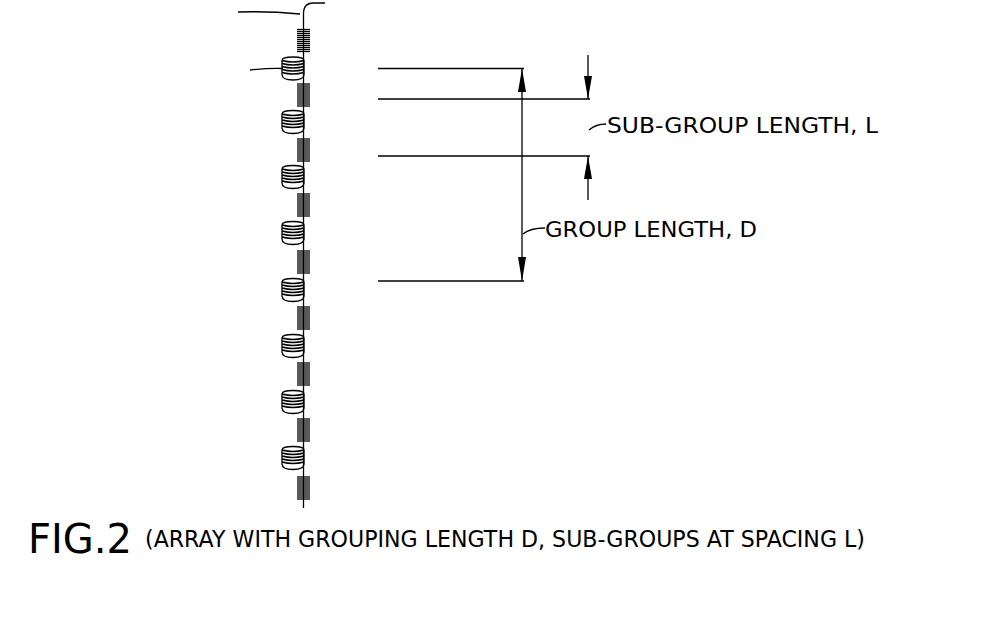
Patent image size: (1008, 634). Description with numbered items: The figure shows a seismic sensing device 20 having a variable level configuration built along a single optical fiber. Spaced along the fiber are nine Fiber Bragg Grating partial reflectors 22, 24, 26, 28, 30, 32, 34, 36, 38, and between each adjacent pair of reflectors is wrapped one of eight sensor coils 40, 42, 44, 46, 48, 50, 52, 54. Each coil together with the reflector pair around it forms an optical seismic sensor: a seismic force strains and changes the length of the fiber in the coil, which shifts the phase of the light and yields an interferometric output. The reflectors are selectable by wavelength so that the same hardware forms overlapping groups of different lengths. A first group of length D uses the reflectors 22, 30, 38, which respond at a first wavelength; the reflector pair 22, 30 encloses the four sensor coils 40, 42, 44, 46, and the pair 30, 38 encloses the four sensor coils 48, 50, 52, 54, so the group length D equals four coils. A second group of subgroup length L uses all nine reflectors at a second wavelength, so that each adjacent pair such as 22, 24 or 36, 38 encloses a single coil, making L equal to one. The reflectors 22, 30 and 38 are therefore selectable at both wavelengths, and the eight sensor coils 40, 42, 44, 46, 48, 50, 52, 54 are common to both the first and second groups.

The seismic sensing device 20 is at (110, 112).
The Fiber Bragg Grating partial reflector 22 is at (297, 42).
The Fiber Bragg Grating partial reflector 24 is at (297, 96).
The Fiber Bragg Grating partial reflector 26 is at (297, 152).
The Fiber Bragg Grating partial reflector 28 is at (297, 206).
The Fiber Bragg Grating partial reflector 30 is at (297, 264).
The Fiber Bragg Grating partial reflector 32 is at (297, 320).
The Fiber Bragg Grating partial reflector 34 is at (297, 376).
The Fiber Bragg Grating partial reflector 36 is at (297, 432).
The Fiber Bragg Grating partial reflector 38 is at (297, 490).
The sensor coil 40 is at (305, 62).
The sensor coil 42 is at (305, 116).
The sensor coil 44 is at (305, 170).
The sensor coil 46 is at (305, 226).
The sensor coil 48 is at (305, 284).
The sensor coil 50 is at (305, 340).
The sensor coil 52 is at (305, 396).
The sensor coil 54 is at (305, 452).